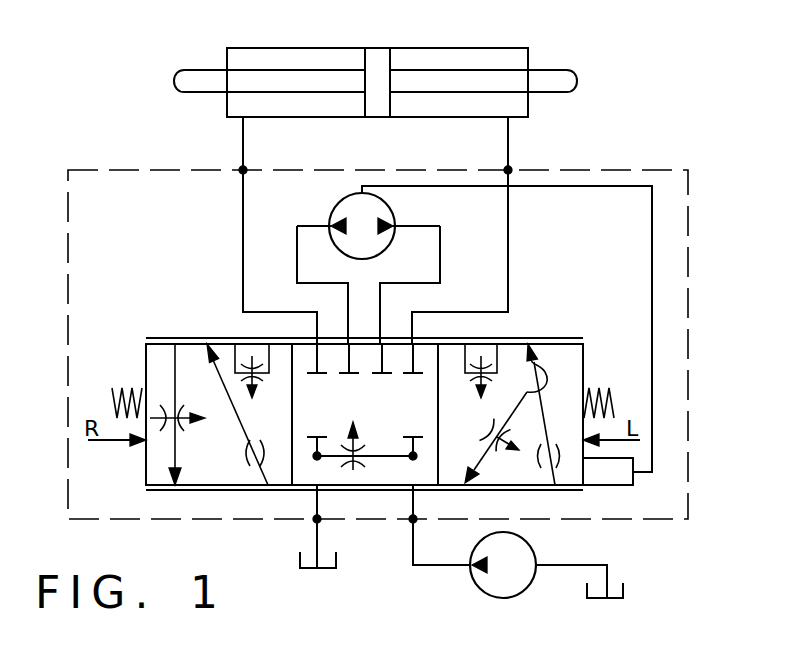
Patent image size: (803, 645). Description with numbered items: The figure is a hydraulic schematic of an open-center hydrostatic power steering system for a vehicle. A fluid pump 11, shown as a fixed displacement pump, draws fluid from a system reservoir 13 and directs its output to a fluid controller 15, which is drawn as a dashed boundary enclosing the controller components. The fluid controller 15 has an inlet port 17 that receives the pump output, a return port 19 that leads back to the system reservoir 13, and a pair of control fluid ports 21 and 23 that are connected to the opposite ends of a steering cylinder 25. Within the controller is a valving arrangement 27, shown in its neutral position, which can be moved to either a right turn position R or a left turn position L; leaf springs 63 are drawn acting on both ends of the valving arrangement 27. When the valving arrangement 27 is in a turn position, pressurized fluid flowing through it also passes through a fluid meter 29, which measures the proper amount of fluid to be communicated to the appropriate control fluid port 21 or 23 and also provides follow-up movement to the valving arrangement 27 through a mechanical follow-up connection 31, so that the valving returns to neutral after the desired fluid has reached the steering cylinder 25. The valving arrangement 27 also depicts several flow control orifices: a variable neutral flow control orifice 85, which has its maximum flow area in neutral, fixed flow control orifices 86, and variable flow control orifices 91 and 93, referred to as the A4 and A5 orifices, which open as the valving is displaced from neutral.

The fluid pump 11 is at (533, 549).
The system reservoir 13 is at (337, 560).
The fluid controller 15 is at (690, 166).
The inlet port 17 is at (411, 519).
The return port 19 is at (316, 519).
The control fluid port 21 is at (243, 170).
The control fluid port 23 is at (508, 170).
The steering cylinder 25 is at (247, 48).
The valving arrangement 27 is at (574, 332).
The fluid meter 29 is at (333, 210).
The mechanical follow-up connection 31 is at (547, 188).
The leaf springs 63 is at (122, 390).
The variable neutral flow control orifice 85 is at (367, 447).
The fixed flow control orifice 86 is at (243, 462).
The variable flow control orifice 91 is at (262, 383).
The variable flow control orifice 93 is at (182, 430).